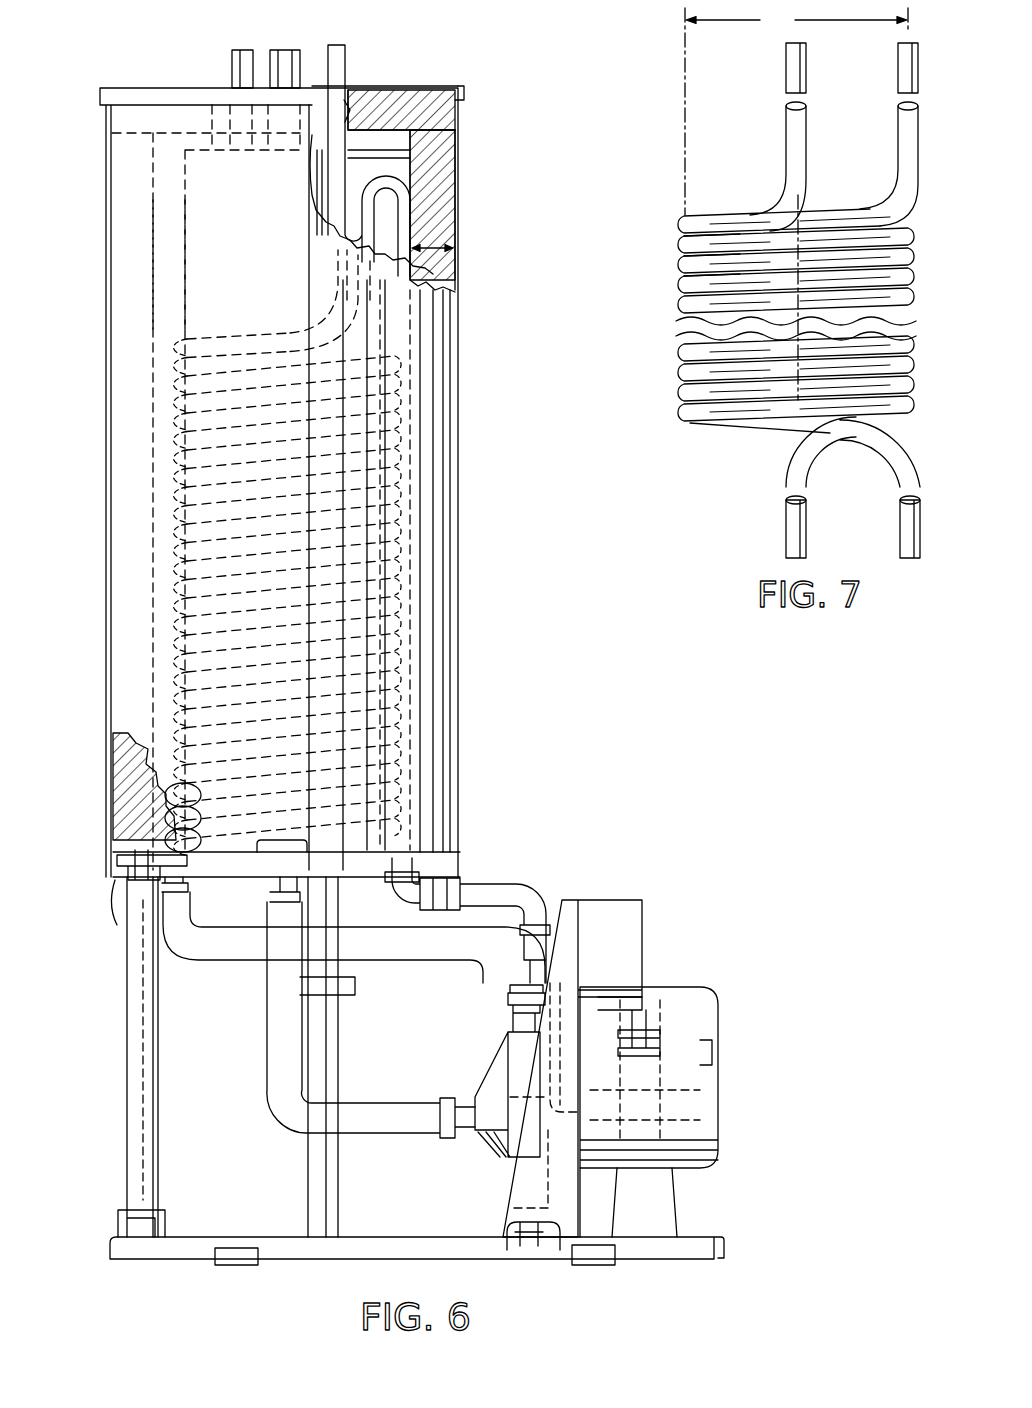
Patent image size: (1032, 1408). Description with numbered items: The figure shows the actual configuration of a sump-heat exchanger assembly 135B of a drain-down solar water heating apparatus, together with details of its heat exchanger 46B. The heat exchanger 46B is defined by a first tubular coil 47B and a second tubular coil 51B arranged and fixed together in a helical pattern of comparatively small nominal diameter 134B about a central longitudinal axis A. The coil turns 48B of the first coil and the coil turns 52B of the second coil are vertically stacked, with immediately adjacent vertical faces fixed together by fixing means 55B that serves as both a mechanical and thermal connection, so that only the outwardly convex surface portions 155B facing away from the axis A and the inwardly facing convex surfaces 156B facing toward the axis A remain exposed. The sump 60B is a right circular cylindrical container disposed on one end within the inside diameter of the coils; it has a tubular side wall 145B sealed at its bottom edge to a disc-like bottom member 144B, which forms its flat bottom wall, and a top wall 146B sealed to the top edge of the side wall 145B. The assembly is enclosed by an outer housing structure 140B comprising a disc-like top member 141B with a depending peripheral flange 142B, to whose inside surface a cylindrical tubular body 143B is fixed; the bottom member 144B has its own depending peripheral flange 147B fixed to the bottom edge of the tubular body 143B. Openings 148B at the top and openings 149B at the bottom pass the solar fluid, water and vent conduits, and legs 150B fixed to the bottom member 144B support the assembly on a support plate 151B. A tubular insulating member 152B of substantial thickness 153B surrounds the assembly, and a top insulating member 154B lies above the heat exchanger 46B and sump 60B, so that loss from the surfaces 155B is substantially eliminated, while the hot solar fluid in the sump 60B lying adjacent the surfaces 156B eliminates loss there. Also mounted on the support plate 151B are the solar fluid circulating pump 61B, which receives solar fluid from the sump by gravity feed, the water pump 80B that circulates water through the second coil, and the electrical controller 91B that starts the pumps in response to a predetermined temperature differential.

In FIG. 6, the sump 60B is at (192, 150).
In FIG. 6, the tubular side wall 145B is at (185, 258).
In FIG. 6, the top wall 146B is at (213, 148).
In FIG. 6, the openings at the top 148B is at (355, 75).
In FIG. 6, the top insulating member 154B is at (375, 100).
In FIG. 6, the top member 141B is at (440, 88).
In FIG. 6, the peripheral flange 142B is at (462, 98).
In FIG. 6, the sump-heat exchanger assembly 135B is at (478, 150).
In FIG. 6, the tubular insulating member 152B is at (442, 178).
In FIG. 6, the tubular body 143B is at (462, 215).
In FIG. 6, the thickness 153B is at (440, 262).
In FIG. 6, the heat exchanger 46B is at (405, 565).
In FIG. 7, the heat exchanger 46B is at (680, 364).
In FIG. 6, the outer housing structure 140B is at (458, 653).
In FIG. 6, the bottom member 144B is at (150, 838).
In FIG. 6, the peripheral flange 147B is at (113, 880).
In FIG. 6, the openings at the bottom 149B is at (345, 886).
In FIG. 6, the electrical controller 91B is at (633, 928).
In FIG. 6, the pump 80B is at (700, 1033).
In FIG. 6, the solar fluid circulating pump 61B is at (687, 1141).
In FIG. 6, the legs 150B is at (130, 1108).
In FIG. 6, the support plate 151B is at (690, 1240).
In FIG. 7, the nominal diameter 134B is at (796, 111).
In FIG. 7, the first tubular coil 47B is at (742, 180).
In FIG. 7, the outwardly convex surface portions 155B is at (919, 254).
In FIG. 7, the central longitudinal axis A is at (798, 216).
In FIG. 7, the coil turns 48B is at (680, 225).
In FIG. 7, the second tubular coil 51B is at (680, 247).
In FIG. 7, the coil turns 52B is at (680, 282).
In FIG. 7, the fixing means 55B is at (680, 301).
In FIG. 7, the inwardly facing convex surfaces 156B is at (785, 423).